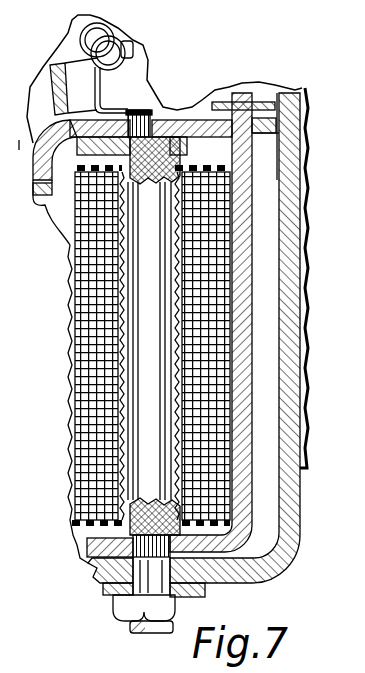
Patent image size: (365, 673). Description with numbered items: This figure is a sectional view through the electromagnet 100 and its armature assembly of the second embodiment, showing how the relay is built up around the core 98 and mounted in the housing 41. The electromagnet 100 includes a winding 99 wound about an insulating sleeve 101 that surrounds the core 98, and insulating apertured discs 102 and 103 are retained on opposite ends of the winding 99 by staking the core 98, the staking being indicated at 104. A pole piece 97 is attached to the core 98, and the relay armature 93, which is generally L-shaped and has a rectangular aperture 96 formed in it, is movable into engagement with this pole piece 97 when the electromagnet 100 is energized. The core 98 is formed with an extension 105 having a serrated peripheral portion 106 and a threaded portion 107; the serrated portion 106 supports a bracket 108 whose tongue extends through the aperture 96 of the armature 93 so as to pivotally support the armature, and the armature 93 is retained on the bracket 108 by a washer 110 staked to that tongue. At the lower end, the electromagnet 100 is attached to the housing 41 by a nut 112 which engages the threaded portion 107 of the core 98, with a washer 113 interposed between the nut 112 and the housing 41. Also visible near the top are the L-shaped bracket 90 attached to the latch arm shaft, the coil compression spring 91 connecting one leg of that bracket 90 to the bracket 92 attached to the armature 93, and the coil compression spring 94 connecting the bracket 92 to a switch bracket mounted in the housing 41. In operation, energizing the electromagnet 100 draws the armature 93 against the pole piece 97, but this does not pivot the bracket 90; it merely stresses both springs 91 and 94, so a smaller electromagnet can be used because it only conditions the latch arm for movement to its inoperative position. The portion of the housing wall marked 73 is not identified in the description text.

The housing 41 is at (330, 517).
The housing wall 73 is at (36, 222).
The L-shaped bracket 90 is at (60, 64).
The coil compression spring 91 is at (134, 49).
The bracket 92 is at (101, 88).
The relay armature 93 is at (200, 122).
The coil compression spring 94 is at (115, 37).
The rectangular aperture 96 is at (300, 107).
The pole piece 97 is at (38, 192).
The core 98 is at (133, 285).
The winding 99 is at (73, 415).
The electromagnet 100 is at (82, 363).
The insulating sleeve 101 is at (120, 443).
The insulating apertured disc 102 is at (278, 163).
The insulating apertured disc 103 is at (77, 523).
The staking 104 is at (187, 156).
The extension 105 is at (147, 572).
The serrated peripheral portion 106 is at (204, 513).
The threaded portion 107 is at (153, 634).
The bracket 108 is at (244, 287).
The washer 110 is at (264, 101).
The nut 112 is at (192, 600).
The washer 113 is at (100, 590).